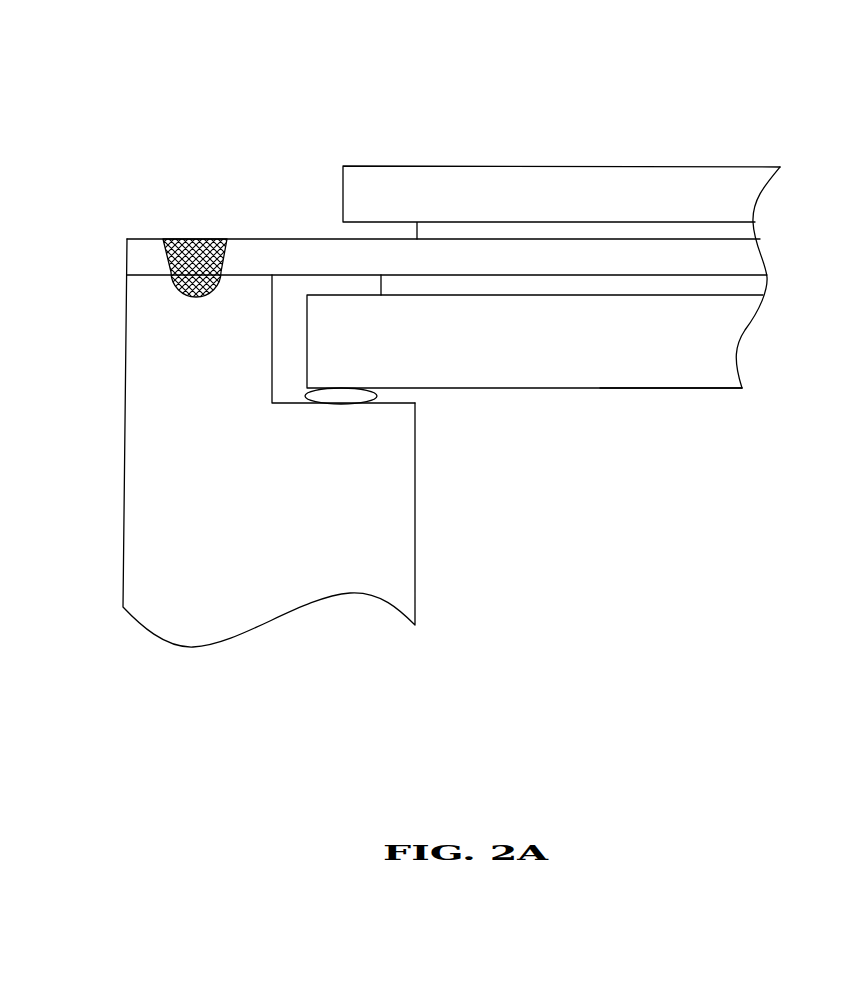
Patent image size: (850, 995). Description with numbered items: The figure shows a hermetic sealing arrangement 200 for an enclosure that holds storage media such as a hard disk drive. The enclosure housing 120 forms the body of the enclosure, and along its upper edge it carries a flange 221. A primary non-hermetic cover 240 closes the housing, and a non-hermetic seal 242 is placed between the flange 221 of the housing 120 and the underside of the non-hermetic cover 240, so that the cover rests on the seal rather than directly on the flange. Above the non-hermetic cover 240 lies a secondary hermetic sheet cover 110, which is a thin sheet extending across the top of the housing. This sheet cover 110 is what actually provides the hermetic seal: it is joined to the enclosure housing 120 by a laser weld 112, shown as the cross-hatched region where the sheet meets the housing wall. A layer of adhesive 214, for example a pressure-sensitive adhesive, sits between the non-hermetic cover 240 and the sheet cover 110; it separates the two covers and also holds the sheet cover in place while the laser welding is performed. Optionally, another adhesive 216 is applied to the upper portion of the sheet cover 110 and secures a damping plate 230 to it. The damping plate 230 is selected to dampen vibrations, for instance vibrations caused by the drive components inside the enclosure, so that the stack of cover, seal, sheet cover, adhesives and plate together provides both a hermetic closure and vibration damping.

The hermetic sealing arrangement 200 is at (545, 53).
The secondary hermetic sheet cover 110 is at (287, 238).
The laser weld 112 is at (193, 238).
The enclosure housing 120 is at (124, 451).
The flange 221 is at (290, 404).
The non-hermetic seal 242 is at (374, 392).
The primary non-hermetic cover 240 is at (670, 389).
The adhesive 214 is at (767, 287).
The another adhesive 216 is at (758, 232).
The damping plate 230 is at (708, 167).